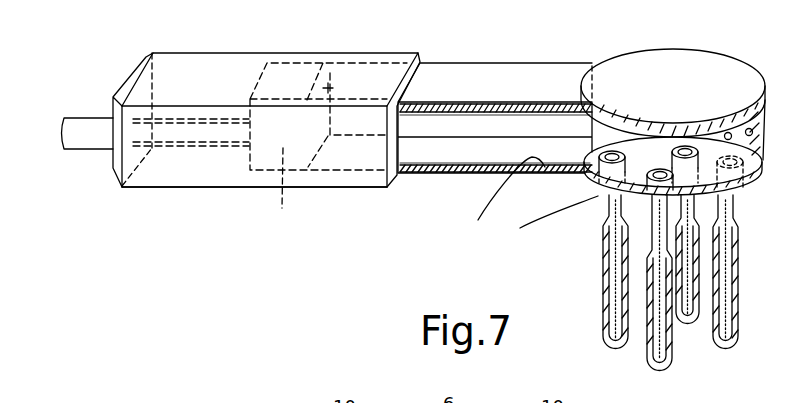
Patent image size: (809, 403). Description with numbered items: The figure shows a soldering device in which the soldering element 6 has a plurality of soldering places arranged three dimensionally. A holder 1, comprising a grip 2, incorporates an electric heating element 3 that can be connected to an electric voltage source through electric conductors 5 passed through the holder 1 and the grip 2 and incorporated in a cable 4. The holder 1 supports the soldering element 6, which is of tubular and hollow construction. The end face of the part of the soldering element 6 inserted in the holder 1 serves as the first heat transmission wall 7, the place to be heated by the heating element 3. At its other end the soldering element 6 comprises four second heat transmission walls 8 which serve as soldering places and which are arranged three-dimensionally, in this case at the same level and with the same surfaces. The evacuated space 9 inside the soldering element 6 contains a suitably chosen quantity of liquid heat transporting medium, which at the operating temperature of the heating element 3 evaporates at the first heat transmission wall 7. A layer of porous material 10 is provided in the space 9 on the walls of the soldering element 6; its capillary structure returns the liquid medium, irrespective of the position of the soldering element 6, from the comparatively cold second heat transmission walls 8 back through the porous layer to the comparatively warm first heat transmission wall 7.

The holder 1 is at (357, 180).
The grip 2 is at (215, 175).
The electric heating element 3 is at (305, 170).
The cable 4 is at (90, 138).
The electric conductors 5 is at (210, 133).
The soldering element 6 is at (630, 52).
The first heat transmission wall 7 is at (331, 88).
The second heat transmission wall 8 is at (723, 348).
The evacuated space 9 is at (555, 134).
The layer of porous material 10 is at (497, 130).